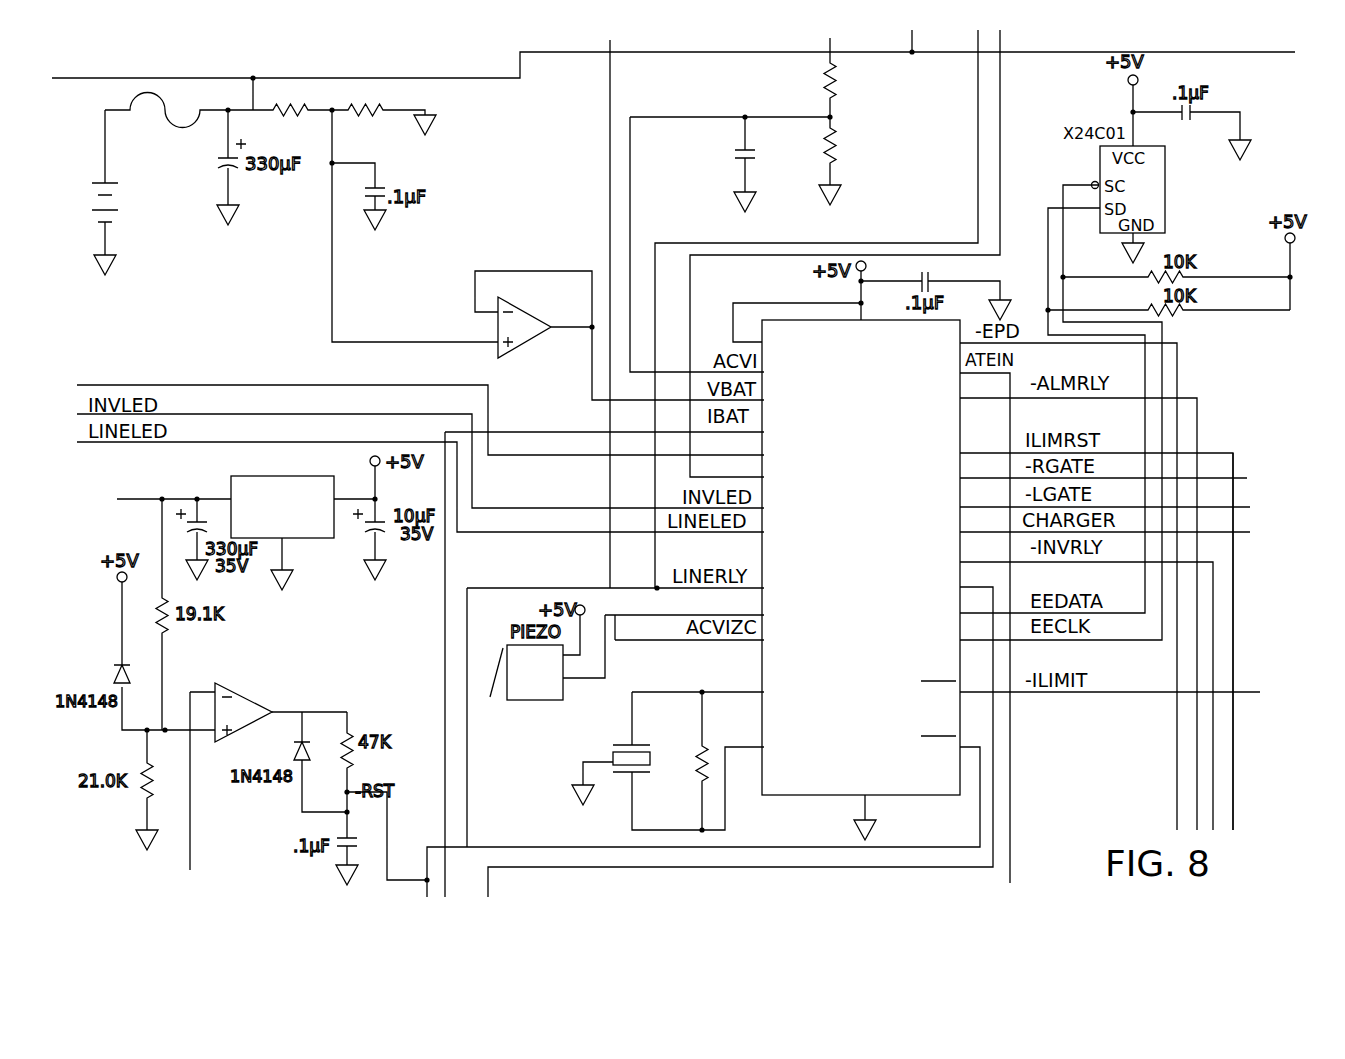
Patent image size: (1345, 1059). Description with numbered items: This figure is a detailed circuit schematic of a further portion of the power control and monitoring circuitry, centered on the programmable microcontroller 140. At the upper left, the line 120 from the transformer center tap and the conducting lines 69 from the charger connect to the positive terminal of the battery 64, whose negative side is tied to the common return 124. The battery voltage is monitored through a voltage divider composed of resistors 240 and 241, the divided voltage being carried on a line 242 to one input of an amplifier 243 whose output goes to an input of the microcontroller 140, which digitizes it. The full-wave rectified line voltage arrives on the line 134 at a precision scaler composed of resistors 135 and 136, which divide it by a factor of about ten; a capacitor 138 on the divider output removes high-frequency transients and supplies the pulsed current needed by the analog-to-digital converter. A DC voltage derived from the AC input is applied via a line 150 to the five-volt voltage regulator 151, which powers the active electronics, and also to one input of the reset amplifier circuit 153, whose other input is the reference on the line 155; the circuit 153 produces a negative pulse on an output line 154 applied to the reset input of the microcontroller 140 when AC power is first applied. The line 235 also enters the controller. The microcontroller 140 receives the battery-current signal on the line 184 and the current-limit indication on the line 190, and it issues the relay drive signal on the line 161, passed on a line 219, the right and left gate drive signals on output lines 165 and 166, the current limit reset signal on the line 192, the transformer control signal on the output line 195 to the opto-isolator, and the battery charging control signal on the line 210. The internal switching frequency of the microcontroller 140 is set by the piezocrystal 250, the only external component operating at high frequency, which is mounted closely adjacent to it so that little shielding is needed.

The line 120 is at (160, 78).
The conducting lines 69 is at (356, 78).
The resistor 240 is at (300, 110).
The resistor 241 is at (388, 108).
The battery 64 is at (115, 183).
The common return 124 is at (113, 268).
The line 242 is at (332, 275).
The amplifier 243 is at (520, 350).
The line voltage sense line 235 is at (610, 102).
The line 134 is at (833, 42).
The resistor 135 is at (822, 73).
The resistor 136 is at (822, 150).
The capacitor 138 is at (735, 165).
The line 161 is at (978, 136).
The output line 195 is at (1000, 105).
The microcontroller 140 is at (797, 318).
The line 184 is at (445, 563).
The line 219 is at (467, 747).
The piezocrystal 250 is at (658, 760).
The output line 165 is at (1247, 478).
The output line 166 is at (1250, 507).
The line 210 is at (1250, 532).
The line 190 is at (1128, 693).
The line 192 is at (1233, 742).
The line 150 is at (181, 497).
The voltage regulator 151 is at (241, 476).
The reset amplifier circuit 153 is at (228, 683).
The output line 154 is at (290, 710).
The line 155 is at (190, 832).